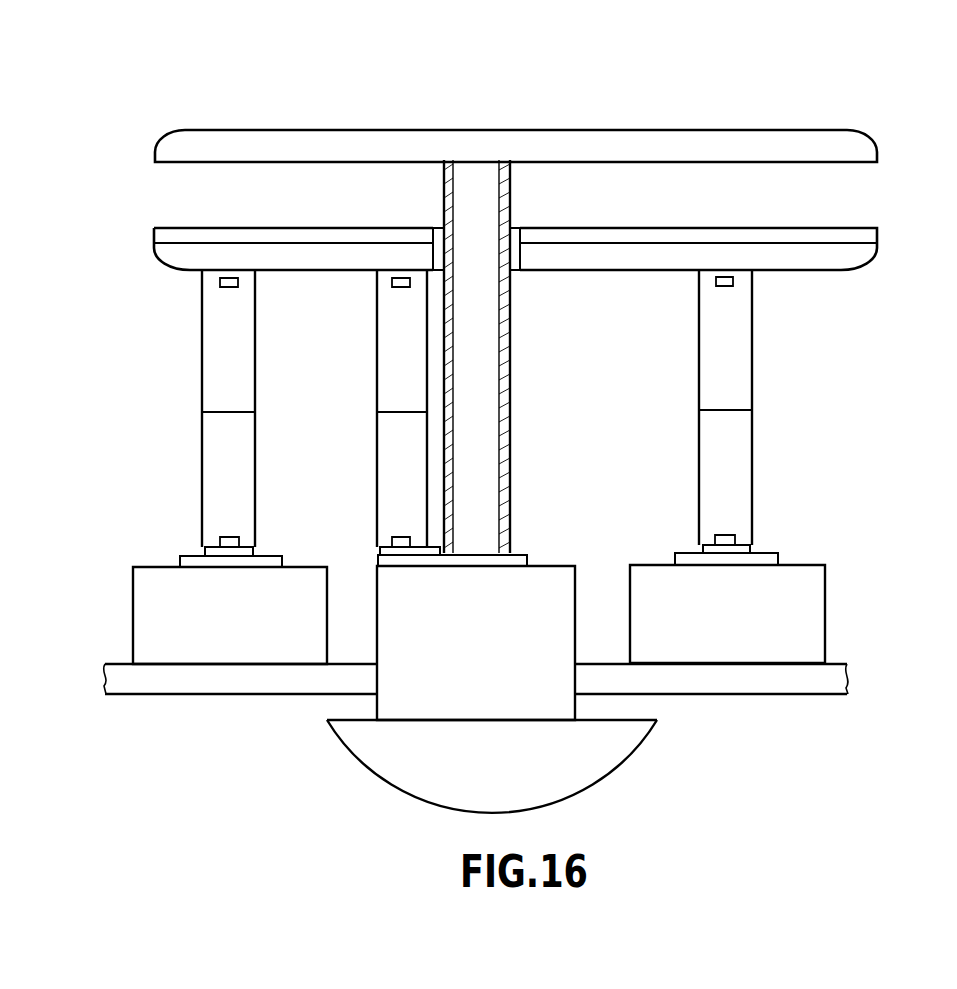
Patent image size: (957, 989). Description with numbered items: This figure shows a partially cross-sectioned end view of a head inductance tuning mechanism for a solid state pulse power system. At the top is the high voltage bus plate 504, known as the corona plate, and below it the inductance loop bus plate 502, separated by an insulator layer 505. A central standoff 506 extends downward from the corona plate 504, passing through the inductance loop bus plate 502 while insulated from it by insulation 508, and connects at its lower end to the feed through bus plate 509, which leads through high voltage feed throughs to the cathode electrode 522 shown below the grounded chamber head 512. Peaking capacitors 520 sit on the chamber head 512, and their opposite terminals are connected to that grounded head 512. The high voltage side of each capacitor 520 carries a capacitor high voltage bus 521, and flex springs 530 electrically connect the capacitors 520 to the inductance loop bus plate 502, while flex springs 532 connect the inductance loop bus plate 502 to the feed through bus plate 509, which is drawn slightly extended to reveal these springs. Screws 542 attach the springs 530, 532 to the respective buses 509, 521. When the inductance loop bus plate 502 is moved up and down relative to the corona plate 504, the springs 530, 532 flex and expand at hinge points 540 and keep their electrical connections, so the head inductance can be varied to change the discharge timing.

The inductance loop bus plate 502 is at (168, 258).
The high voltage bus plate 504 is at (223, 140).
The insulator layer 505 is at (175, 236).
The standoff 506 is at (483, 395).
The insulation 508 is at (508, 342).
The feed through bus plate 509 is at (515, 560).
The chamber head 512 is at (392, 703).
The peaking capacitor 520 is at (150, 603).
The capacitor high voltage bus 521 is at (272, 561).
The cathode electrode 522 is at (628, 746).
The flex spring 530 is at (240, 348).
The flex spring 532 is at (392, 357).
The hinge point 540 is at (237, 413).
The screw 542 is at (231, 538).